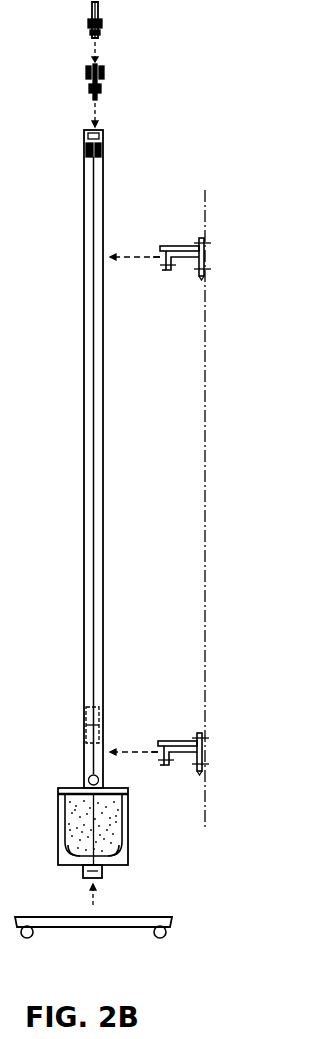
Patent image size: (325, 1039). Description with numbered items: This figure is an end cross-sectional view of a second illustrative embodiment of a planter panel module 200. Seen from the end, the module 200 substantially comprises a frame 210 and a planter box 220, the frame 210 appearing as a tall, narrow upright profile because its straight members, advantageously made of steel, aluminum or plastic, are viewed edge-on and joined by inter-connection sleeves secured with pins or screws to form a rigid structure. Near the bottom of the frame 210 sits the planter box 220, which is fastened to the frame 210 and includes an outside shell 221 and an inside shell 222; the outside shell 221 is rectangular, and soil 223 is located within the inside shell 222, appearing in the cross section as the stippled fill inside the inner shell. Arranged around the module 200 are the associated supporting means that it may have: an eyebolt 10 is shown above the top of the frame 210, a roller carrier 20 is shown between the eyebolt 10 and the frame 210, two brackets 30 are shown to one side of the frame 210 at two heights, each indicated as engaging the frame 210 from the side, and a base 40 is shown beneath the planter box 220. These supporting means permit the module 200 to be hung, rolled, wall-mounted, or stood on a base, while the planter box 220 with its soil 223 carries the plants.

The eyebolt 10 is at (105, 20).
The roller carrier 20 is at (105, 73).
The bracket 30 is at (183, 247).
The base 40 is at (105, 928).
The planter panel module 200 is at (78, 112).
The frame 210 is at (172, 207).
The planter box 220 is at (192, 807).
The outside shell 221 is at (128, 821).
The inside shell 222 is at (112, 848).
The soil 223 is at (110, 858).